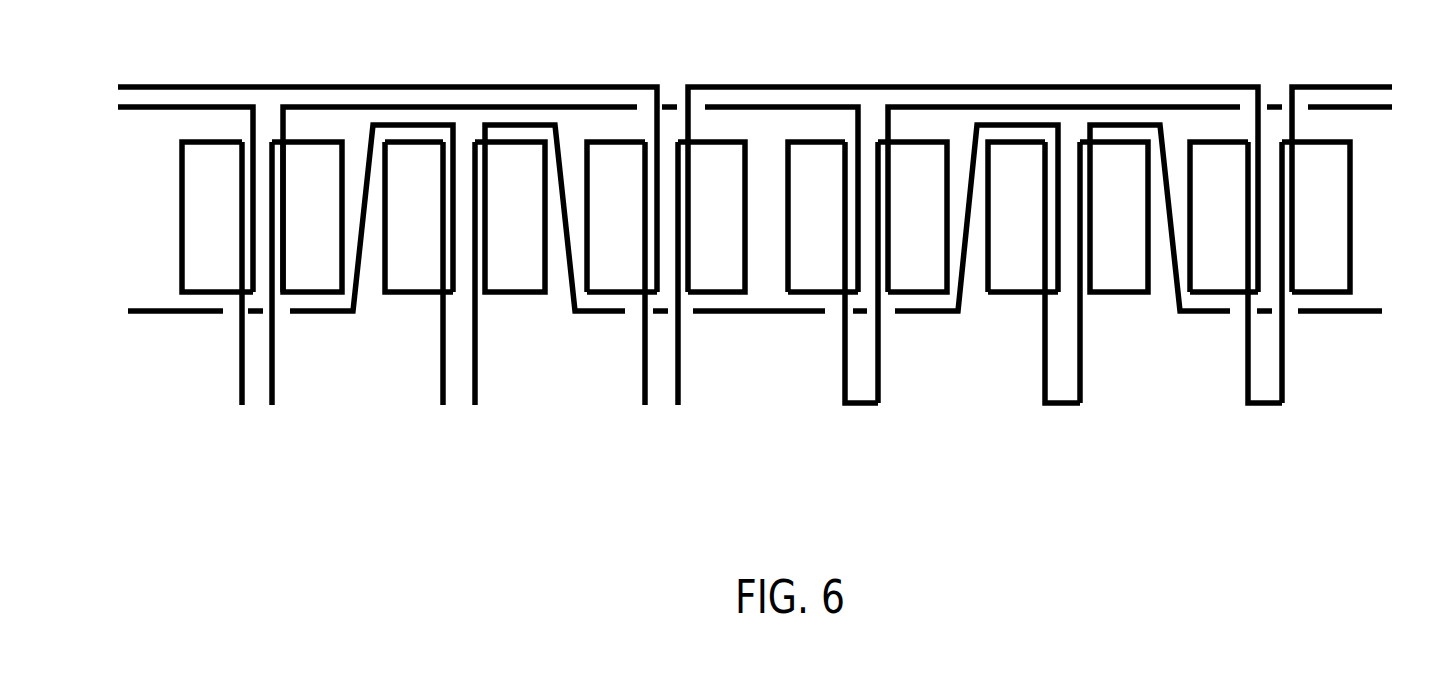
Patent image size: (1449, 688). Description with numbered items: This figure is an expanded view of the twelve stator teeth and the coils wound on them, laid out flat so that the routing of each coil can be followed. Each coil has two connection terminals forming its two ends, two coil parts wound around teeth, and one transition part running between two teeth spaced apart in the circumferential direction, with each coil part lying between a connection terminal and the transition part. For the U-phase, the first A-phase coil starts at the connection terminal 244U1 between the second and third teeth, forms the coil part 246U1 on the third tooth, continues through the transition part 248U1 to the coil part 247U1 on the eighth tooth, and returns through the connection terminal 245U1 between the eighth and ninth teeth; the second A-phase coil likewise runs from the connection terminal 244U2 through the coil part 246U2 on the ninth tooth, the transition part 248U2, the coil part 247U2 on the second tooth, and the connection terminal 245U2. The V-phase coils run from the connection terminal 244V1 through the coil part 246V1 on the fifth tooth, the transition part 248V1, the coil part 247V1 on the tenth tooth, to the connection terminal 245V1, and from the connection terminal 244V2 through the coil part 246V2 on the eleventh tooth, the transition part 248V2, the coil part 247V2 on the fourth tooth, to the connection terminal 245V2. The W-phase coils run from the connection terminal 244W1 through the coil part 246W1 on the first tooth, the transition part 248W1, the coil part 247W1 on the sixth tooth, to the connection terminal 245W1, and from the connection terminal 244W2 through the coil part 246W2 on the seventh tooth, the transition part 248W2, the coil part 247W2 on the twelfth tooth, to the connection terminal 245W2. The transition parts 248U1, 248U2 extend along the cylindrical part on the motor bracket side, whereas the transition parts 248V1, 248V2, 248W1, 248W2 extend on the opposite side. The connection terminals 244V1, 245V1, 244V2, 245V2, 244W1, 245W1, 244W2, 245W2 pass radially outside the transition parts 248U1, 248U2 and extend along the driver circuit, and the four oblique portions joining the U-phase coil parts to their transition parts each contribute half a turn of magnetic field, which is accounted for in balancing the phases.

The connection terminal 244V1 is at (237, 382).
The connection terminal 244V2 is at (840, 395).
The connection terminal 244U1 is at (438, 385).
The connection terminal 244U2 is at (1043, 390).
The connection terminal 244W1 is at (642, 353).
The connection terminal 244W2 is at (1242, 362).
The connection terminal 245V1 is at (885, 362).
The connection terminal 245V2 is at (278, 357).
The connection terminal 245U1 is at (1082, 390).
The connection terminal 245U2 is at (485, 388).
The connection terminal 245W1 is at (1287, 363).
The connection terminal 245W2 is at (682, 363).
The coil part 246V1 is at (182, 222).
The coil part 246V2 is at (817, 147).
The coil part 246U1 is at (410, 297).
The coil part 246U2 is at (1007, 297).
The coil part 246W1 is at (612, 147).
The coil part 246W2 is at (1218, 147).
The coil part 247V1 is at (915, 147).
The coil part 247V2 is at (312, 147).
The coil part 247U1 is at (1132, 297).
The coil part 247U2 is at (528, 297).
The coil part 247W1 is at (1352, 213).
The coil part 247W2 is at (717, 147).
The transition part 248V1 is at (1092, 105).
The transition part 248V2 is at (507, 105).
The transition part 248U1 is at (163, 313).
The transition part 248U2 is at (802, 315).
The transition part 248W1 is at (398, 85).
The transition part 248W2 is at (1000, 85).